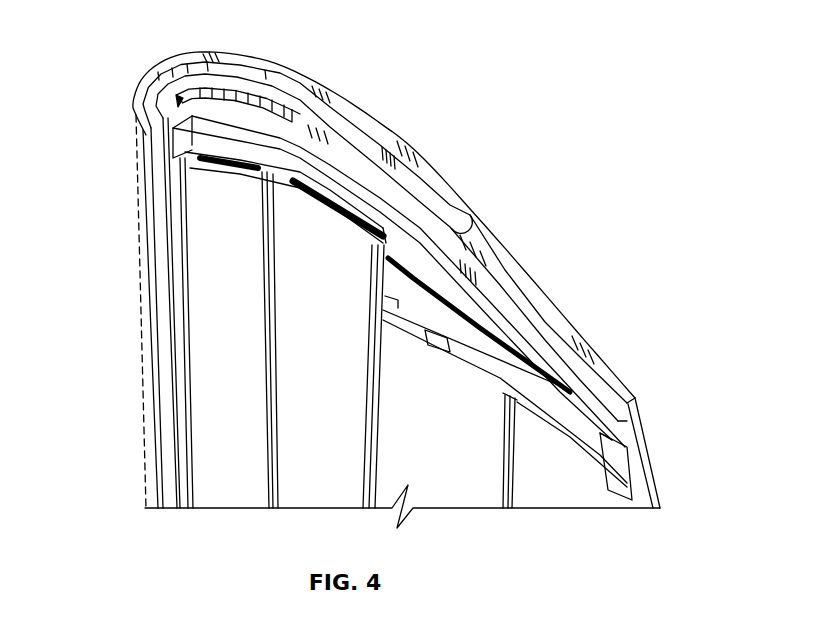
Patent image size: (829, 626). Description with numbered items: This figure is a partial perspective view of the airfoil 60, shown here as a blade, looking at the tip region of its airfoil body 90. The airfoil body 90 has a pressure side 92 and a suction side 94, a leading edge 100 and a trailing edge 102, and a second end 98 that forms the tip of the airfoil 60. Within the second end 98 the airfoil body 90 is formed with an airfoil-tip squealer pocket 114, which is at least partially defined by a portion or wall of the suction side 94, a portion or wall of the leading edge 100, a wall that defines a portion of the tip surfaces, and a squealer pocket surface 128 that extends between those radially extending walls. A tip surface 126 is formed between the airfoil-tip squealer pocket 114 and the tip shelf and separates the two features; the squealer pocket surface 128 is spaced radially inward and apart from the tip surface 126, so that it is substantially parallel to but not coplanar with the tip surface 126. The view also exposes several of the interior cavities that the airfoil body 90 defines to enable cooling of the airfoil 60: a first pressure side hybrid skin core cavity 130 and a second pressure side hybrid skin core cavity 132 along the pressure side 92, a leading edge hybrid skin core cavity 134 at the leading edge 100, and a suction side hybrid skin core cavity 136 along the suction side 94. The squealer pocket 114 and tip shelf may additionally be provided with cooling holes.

The airfoil 60 is at (118, 221).
The airfoil body 90 is at (457, 163).
The pressure side 92 is at (286, 493).
The suction side 94 is at (498, 242).
The second end 98 is at (407, 137).
The leading edge 100 is at (140, 318).
The trailing edge 102 is at (647, 440).
The airfoil-tip squealer pocket 114 is at (298, 122).
The tip surface 126 is at (517, 283).
The squealer pocket surface 128 is at (333, 140).
The first pressure side hybrid skin core cavity 130 is at (197, 150).
The second pressure side hybrid skin core cavity 132 is at (300, 186).
The leading edge hybrid skin core cavity 134 is at (166, 113).
The suction side hybrid skin core cavity 136 is at (255, 100).